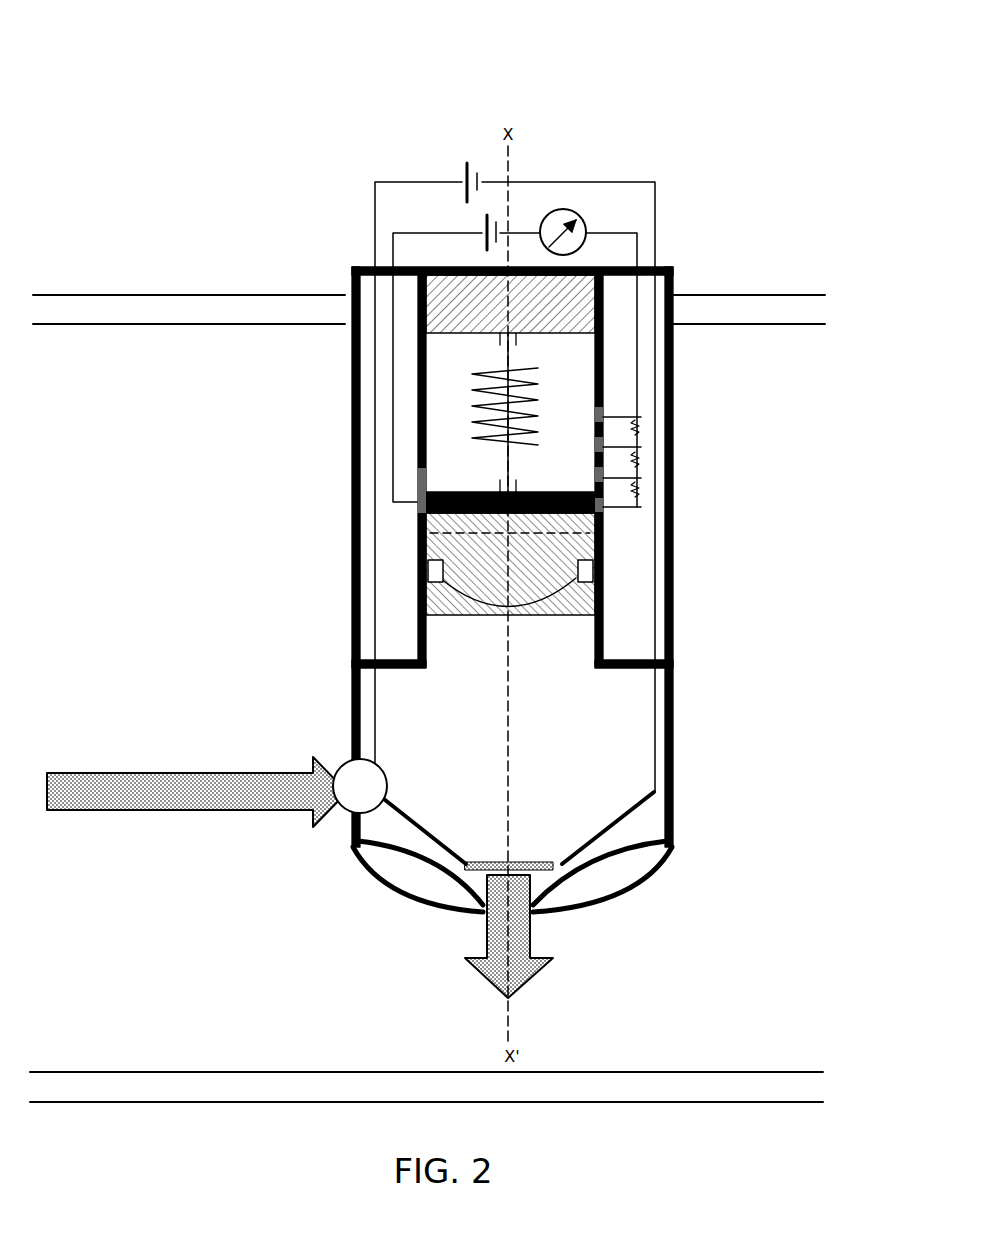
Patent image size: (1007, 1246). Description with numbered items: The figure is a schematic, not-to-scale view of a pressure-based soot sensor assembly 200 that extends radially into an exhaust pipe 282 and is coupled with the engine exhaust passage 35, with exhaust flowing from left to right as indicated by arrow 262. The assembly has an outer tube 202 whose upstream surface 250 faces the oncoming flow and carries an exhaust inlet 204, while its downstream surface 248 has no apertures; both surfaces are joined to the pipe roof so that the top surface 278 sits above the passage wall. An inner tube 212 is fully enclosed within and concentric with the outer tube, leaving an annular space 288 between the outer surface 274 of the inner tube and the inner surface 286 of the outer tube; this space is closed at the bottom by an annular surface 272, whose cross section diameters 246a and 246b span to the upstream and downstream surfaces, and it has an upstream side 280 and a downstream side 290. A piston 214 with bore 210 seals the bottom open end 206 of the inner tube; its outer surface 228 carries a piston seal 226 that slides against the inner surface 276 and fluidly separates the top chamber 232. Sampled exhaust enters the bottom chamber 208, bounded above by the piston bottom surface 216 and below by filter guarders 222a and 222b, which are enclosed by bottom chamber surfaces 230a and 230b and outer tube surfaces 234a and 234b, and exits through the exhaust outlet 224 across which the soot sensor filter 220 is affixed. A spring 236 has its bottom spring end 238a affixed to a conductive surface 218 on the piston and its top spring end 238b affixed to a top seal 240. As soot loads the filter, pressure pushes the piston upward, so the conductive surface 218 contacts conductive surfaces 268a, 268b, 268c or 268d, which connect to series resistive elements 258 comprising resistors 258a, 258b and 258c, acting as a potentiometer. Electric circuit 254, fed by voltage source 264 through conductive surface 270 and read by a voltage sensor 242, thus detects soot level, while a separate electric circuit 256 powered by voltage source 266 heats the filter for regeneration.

The pressure-based soot sensor assembly 200 is at (125, 52).
The engine exhaust passage 35 is at (137, 303).
The exhaust pipe 282 is at (429, 313).
The outer tube 202 is at (352, 373).
The exhaust inlet 204 is at (345, 757).
The bottom open end 206 is at (548, 672).
The bottom chamber 208 is at (480, 728).
The bore 210 is at (510, 513).
The inner tube 212 is at (603, 383).
The piston 214 is at (540, 617).
The piston bottom surface 216 is at (493, 617).
The conductive surface 218 is at (470, 492).
The soot sensor filter 220 is at (495, 858).
The filter guarder 222a is at (385, 838).
The filter guarder 222b is at (637, 837).
The exhaust outlet 224 is at (533, 913).
The piston seal 226 is at (508, 594).
The outer surface of piston 228 is at (510, 564).
The bottom chamber surface 230a is at (390, 848).
The bottom chamber surface 230b is at (626, 849).
The top chamber 232 is at (527, 406).
The outer tube surface 234a is at (402, 888).
The outer tube surface 234b is at (620, 888).
The spring 236 is at (533, 437).
The bottom spring end 238a is at (513, 488).
The top spring end 238b is at (513, 343).
The top seal 240 is at (500, 340).
The voltage sensor 242 is at (572, 222).
The cross section diameter 246a is at (378, 668).
The cross section diameter 246b is at (638, 668).
The downstream surface 248 is at (673, 600).
The upstream surface 250 is at (352, 488).
The electric circuit 254 is at (393, 245).
The electric circuit 256 is at (376, 200).
The resistive elements 258 is at (658, 410).
The resistor 258a is at (645, 430).
The resistor 258b is at (640, 465).
The resistor 258c is at (643, 498).
The arrow 262 is at (197, 788).
The voltage source 264 is at (468, 222).
The voltage source 266 is at (465, 163).
The conductive surface 268a is at (603, 507).
The conductive surface 268b is at (603, 478).
The conductive surface 268c is at (604, 445).
The conductive surface 268d is at (604, 413).
The conductive surface 270 is at (417, 503).
The annular surface 272 is at (387, 660).
The outer surface of inner tube 274 is at (424, 436).
The inner surface of inner tube 276 is at (428, 432).
The top surface 278 is at (657, 266).
The upstream side 280 is at (243, 582).
The inner surface of outer tube 286 is at (382, 574).
The annular space 288 is at (390, 617).
The downstream side 290 is at (748, 580).